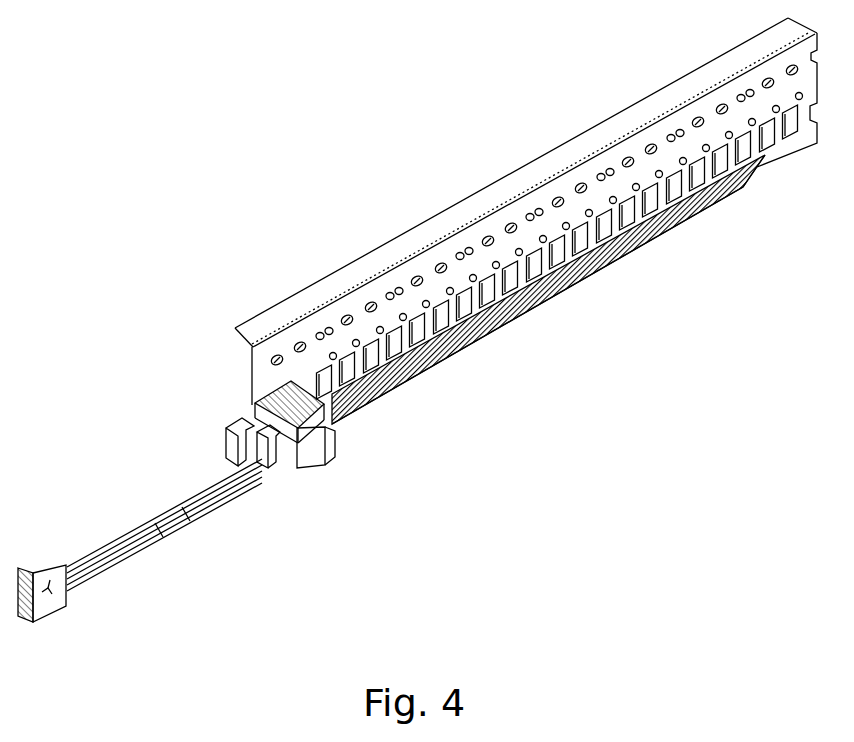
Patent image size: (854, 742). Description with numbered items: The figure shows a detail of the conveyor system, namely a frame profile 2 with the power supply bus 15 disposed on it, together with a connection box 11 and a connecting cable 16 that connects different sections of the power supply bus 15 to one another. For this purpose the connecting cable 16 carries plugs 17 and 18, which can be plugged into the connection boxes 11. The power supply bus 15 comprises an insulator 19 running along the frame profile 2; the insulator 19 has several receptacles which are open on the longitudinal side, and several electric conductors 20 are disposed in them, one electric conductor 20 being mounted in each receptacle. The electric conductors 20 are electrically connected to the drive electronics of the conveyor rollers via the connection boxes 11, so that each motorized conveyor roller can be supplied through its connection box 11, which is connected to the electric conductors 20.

The frame profile 2 is at (455, 213).
The connection box 11 is at (288, 395).
The power supply bus 15 is at (490, 341).
The connecting cable 16 is at (143, 532).
The plug 17 is at (70, 594).
The plug 18 is at (297, 457).
The insulator 19 is at (683, 223).
The electric conductor 20 is at (750, 186).